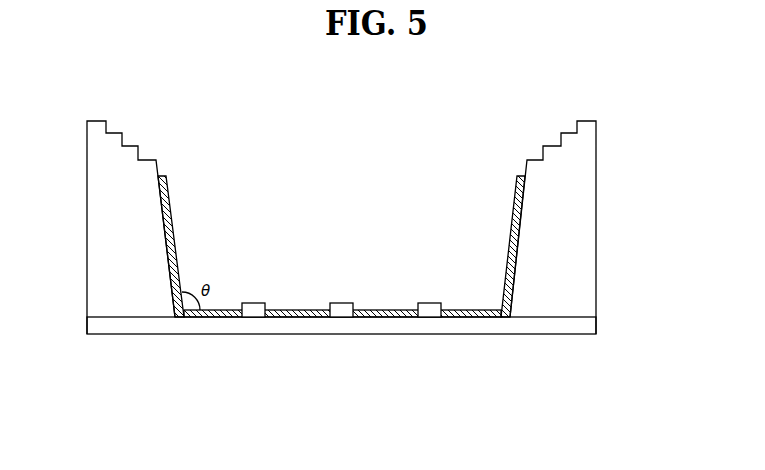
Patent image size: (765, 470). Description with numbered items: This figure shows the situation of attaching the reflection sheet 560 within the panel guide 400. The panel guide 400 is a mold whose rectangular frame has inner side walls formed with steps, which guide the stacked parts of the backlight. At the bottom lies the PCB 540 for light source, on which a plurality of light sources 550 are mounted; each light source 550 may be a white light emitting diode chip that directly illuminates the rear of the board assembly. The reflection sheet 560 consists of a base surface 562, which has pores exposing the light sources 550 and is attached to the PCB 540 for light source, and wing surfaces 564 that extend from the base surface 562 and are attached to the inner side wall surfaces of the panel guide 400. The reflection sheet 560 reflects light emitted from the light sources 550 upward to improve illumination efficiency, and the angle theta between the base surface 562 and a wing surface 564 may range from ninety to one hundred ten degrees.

The panel guide 400 is at (588, 231).
The PCB for light source 540 is at (588, 326).
The light sources 550 is at (253, 308).
The reflection sheet 560 is at (336, 300).
The base surface 562 is at (211, 312).
The wing surfaces 564 is at (171, 282).